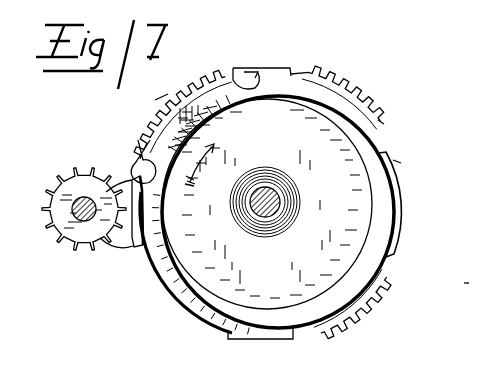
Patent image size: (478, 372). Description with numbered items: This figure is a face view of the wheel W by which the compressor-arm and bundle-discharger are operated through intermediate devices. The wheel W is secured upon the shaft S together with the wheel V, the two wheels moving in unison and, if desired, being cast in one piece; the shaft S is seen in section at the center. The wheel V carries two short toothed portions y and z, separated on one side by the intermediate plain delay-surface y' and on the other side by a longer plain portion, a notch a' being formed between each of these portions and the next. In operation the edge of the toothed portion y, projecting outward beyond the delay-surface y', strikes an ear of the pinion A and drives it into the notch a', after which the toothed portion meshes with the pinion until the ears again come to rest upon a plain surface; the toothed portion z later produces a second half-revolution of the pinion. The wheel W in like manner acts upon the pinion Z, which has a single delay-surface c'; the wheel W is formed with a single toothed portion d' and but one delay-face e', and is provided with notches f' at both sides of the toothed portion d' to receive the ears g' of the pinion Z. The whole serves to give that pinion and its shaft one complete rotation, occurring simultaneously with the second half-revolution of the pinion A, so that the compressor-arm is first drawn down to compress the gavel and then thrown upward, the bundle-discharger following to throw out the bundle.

The wheel w is at (267, 204).
The toothed portion z is at (383, 311).
The shaft s is at (250, 197).
The toothed portion d' is at (262, 78).
The delay-face e' is at (260, 323).
The toothed portion y is at (390, 108).
The delay-surface y' is at (400, 204).
The wheel v is at (428, 162).
The pinion a is at (73, 209).
The notch a' is at (150, 103).
The delay-surface c' is at (127, 211).
The notch f' is at (143, 161).
The ear g' is at (116, 211).